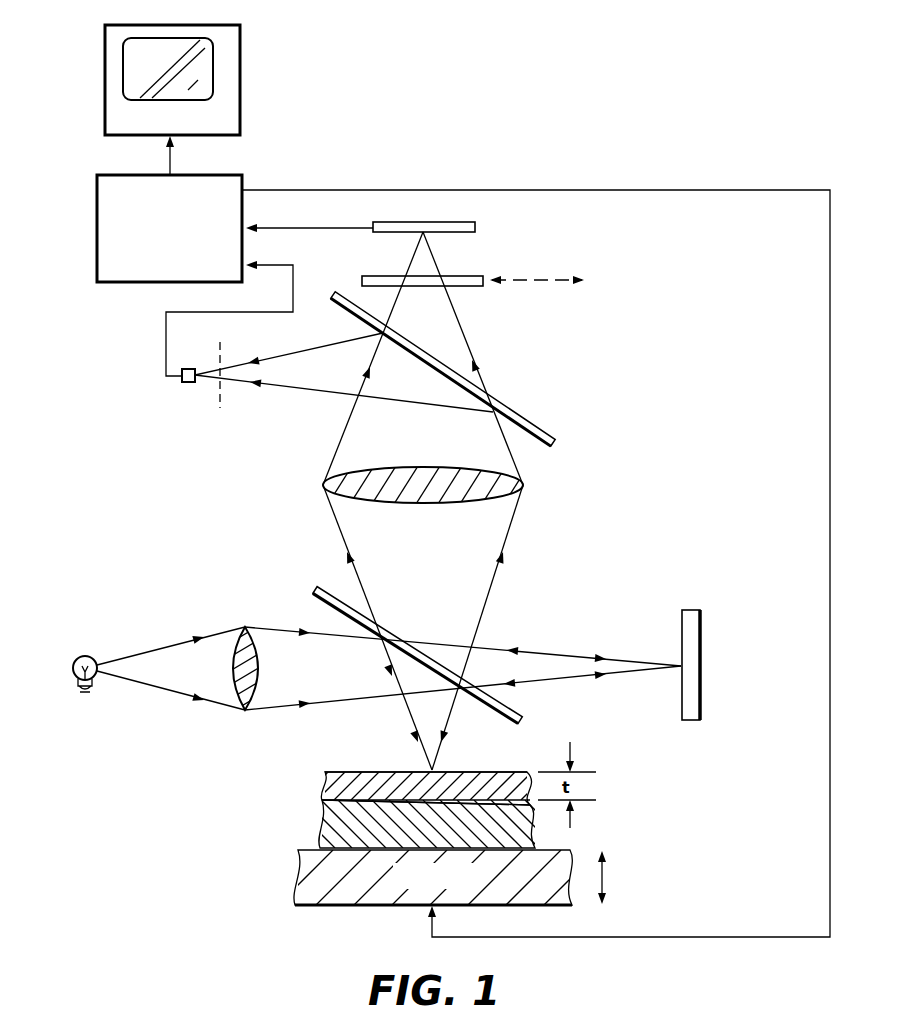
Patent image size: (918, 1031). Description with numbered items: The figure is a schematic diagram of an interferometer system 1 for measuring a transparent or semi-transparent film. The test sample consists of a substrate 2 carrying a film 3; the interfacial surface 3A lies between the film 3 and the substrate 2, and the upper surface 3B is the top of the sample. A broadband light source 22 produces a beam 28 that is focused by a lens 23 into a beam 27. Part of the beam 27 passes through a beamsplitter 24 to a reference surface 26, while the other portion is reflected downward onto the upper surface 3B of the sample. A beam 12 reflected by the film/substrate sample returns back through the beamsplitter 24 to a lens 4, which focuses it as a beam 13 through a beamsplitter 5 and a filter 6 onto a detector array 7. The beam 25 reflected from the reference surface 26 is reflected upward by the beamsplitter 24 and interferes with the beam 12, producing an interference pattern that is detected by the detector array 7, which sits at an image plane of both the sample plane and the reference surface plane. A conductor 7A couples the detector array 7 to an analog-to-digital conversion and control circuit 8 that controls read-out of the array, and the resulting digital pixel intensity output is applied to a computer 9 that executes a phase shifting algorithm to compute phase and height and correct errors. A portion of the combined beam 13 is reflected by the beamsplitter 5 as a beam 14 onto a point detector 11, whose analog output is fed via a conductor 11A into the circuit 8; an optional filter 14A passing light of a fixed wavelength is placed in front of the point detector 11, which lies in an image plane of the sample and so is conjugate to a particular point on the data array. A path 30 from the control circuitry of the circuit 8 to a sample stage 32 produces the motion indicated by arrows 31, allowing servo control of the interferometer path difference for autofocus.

The system 1 is at (215, 800).
The substrate 2 is at (330, 822).
The film 3 is at (330, 785).
The interfacial surface 3A is at (493, 772).
The upper surface 3B is at (360, 772).
The lens 4 is at (483, 477).
The beamsplitter 5 is at (539, 432).
The filter 6 is at (483, 276).
The detector array 7 is at (475, 224).
The conductor 7A is at (350, 227).
The analog-to-digital conversion and control circuit 8 is at (243, 182).
The computer 9 is at (242, 34).
The point detector 11 is at (188, 384).
The conductor 11A is at (226, 313).
The beam 12 is at (355, 566).
The beam 13 is at (340, 447).
The beam 14 is at (330, 347).
The optional filter 14A is at (221, 406).
The broadband light source 22 is at (87, 657).
The lens 23 is at (285, 660).
The beamsplitter 24 is at (514, 722).
The beam 25 is at (539, 674).
The reference surface 26 is at (700, 695).
The beam 27 is at (356, 640).
The beam 28 is at (176, 648).
The path 30 is at (830, 392).
The arrows 31 is at (604, 880).
The sample stage 32 is at (304, 882).